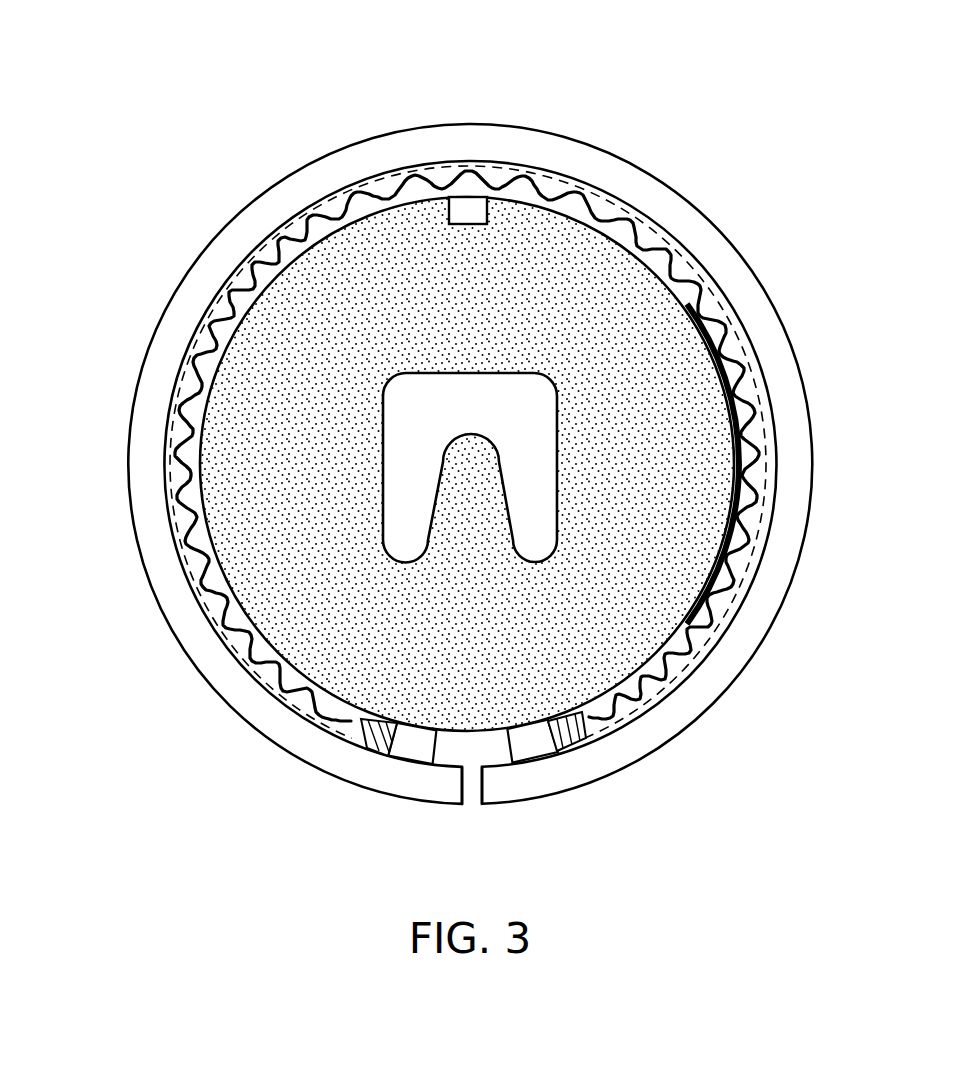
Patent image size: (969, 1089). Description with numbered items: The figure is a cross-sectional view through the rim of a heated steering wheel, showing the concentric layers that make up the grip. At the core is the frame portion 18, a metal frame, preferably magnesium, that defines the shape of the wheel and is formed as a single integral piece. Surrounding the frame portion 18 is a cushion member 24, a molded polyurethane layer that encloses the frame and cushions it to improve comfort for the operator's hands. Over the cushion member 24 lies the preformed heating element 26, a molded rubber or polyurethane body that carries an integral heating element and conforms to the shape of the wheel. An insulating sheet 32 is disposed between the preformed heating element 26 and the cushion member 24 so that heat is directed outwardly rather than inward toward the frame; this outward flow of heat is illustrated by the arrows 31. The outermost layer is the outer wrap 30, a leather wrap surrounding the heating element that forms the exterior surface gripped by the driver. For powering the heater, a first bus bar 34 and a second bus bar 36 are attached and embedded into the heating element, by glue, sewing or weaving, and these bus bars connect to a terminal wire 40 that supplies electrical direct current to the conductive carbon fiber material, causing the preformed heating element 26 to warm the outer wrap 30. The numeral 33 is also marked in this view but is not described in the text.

The frame portion 18 is at (533, 373).
The cushion member 24 is at (565, 228).
The preformed heating element 26 is at (753, 495).
The outer wrap 30 is at (505, 143).
The arrows 31 is at (352, 182).
The insulating sheet 32 is at (740, 417).
The spring centerline 33 is at (323, 745).
The first bus bar 34 is at (373, 752).
The second bus bar 36 is at (582, 745).
The terminal wire 40 is at (470, 787).